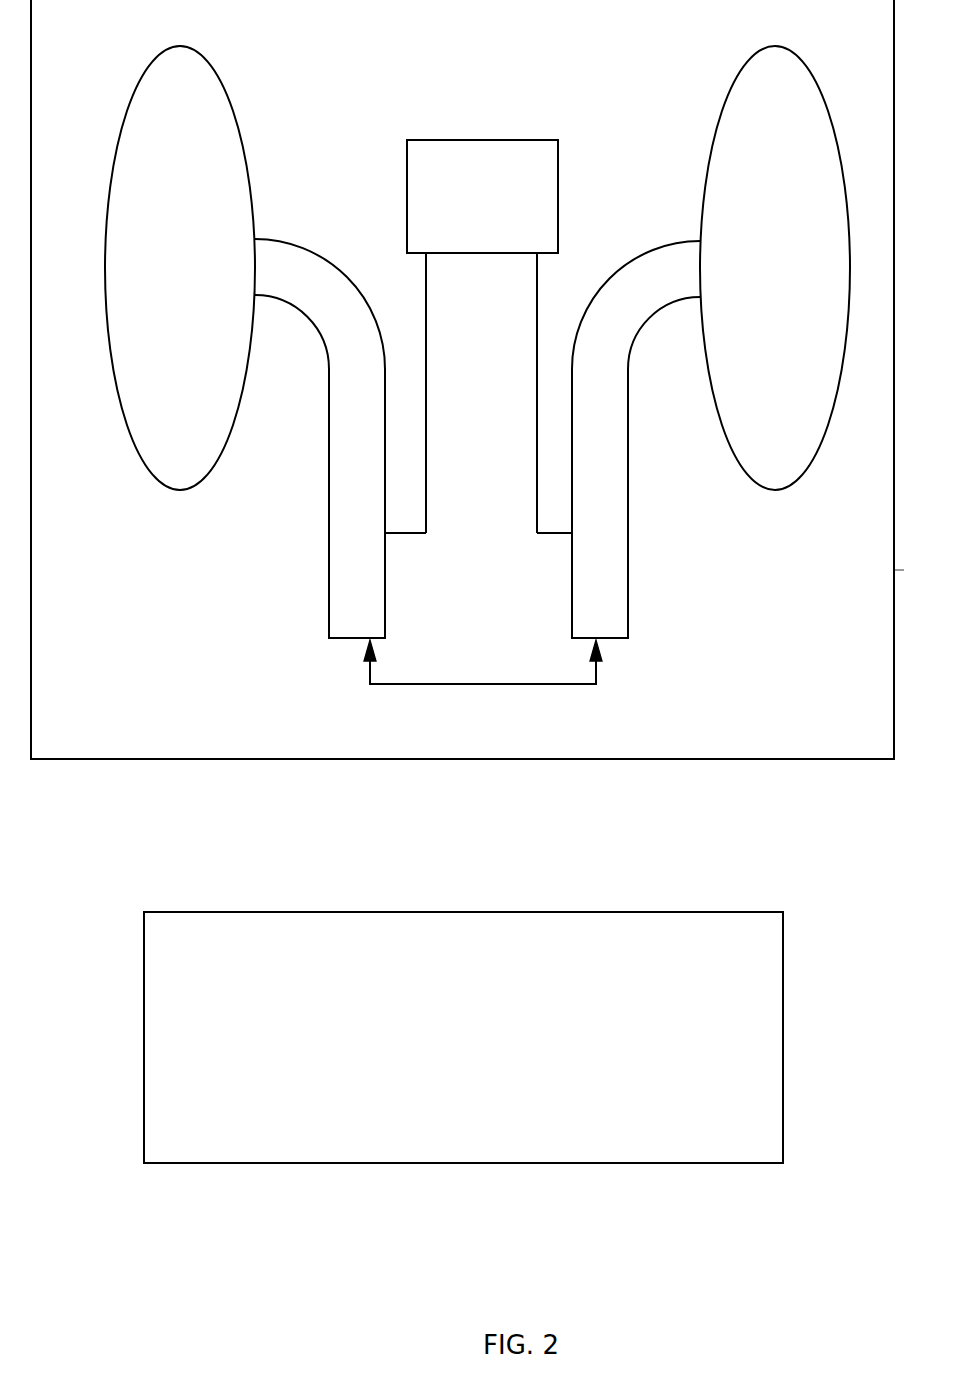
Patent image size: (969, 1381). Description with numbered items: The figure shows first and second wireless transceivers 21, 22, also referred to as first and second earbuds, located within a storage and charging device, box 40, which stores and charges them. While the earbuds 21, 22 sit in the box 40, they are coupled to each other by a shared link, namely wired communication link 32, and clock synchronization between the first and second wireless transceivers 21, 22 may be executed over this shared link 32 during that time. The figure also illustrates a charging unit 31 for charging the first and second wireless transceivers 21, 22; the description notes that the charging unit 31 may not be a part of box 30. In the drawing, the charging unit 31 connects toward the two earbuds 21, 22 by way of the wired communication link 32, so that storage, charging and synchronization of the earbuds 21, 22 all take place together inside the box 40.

The first wireless transceiver 21 is at (166, 280).
The second wireless transceiver 22 is at (760, 281).
The box 30 is at (449, 732).
The charging unit 31 is at (468, 209).
The wired communication link 32 is at (503, 684).
The box 40 is at (449, 1049).